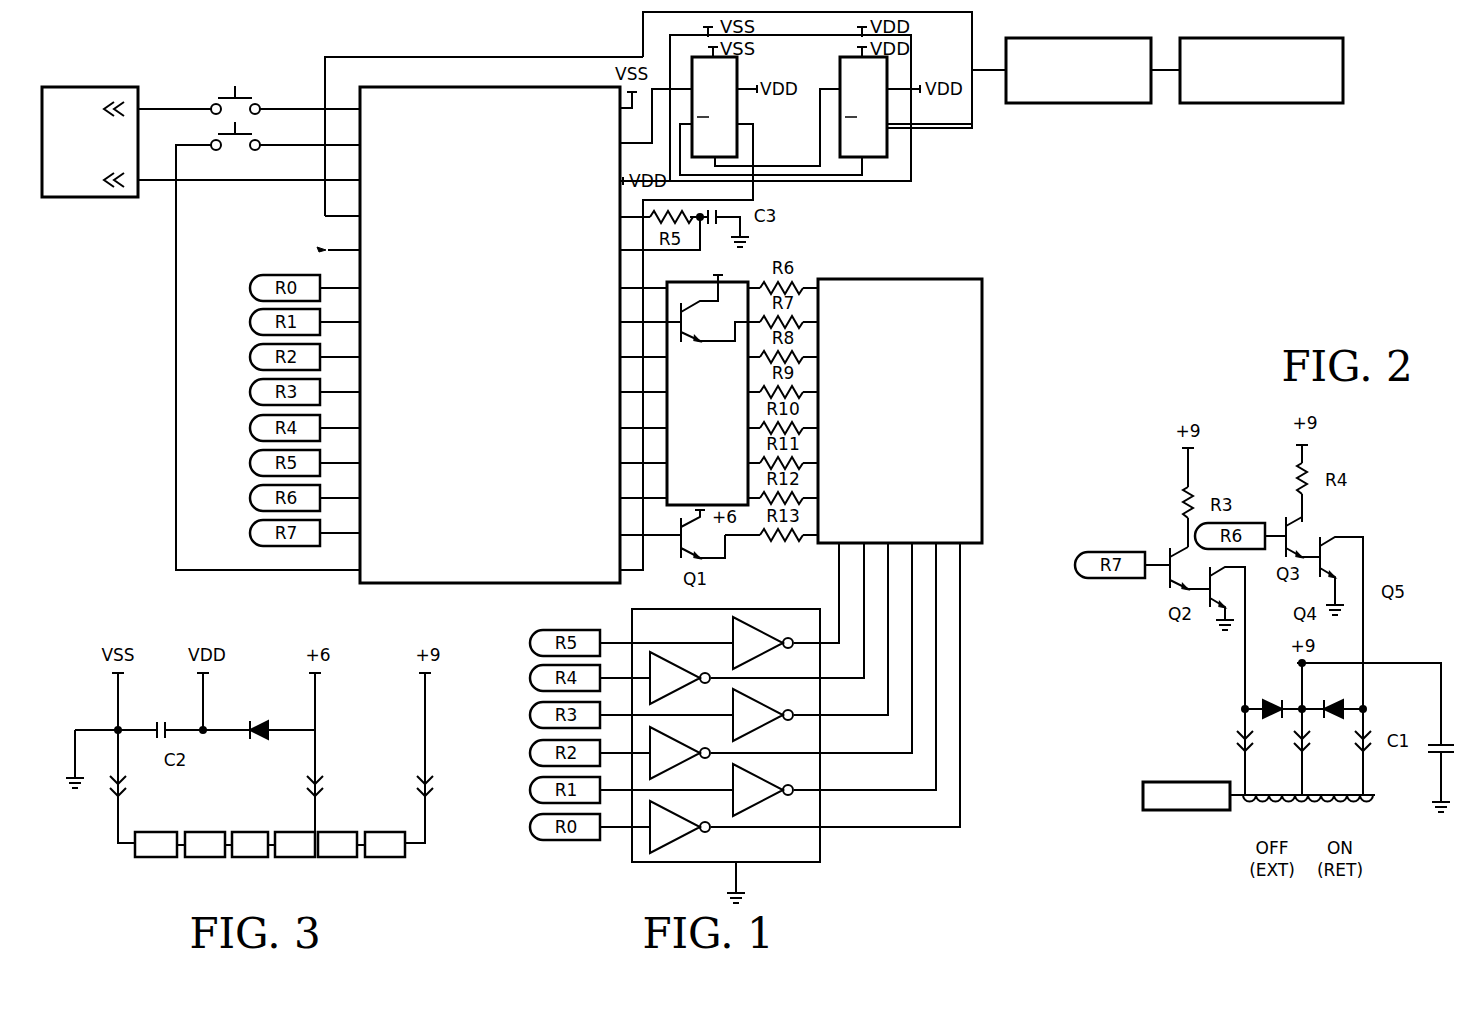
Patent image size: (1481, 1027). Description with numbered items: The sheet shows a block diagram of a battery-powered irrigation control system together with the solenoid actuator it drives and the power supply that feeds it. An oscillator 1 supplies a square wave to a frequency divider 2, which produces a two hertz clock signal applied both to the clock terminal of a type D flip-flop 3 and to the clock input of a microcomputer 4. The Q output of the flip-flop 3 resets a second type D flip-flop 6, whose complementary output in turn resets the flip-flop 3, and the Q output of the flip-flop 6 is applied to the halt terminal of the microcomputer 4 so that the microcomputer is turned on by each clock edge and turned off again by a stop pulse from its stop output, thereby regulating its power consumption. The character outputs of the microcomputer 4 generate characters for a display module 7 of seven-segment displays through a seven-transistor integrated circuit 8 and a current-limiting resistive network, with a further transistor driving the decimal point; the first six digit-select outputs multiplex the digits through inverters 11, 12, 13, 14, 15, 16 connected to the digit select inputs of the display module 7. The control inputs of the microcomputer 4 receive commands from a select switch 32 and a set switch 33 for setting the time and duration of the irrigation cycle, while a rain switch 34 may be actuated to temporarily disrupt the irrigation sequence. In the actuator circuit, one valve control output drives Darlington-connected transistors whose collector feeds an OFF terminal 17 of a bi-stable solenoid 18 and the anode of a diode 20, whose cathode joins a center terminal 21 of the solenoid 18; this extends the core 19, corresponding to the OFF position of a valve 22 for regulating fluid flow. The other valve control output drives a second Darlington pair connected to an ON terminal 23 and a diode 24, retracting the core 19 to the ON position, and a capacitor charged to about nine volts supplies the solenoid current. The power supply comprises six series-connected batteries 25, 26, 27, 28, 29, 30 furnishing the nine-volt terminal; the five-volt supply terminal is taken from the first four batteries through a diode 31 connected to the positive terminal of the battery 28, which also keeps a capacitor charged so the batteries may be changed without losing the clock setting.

In FIG. 1, the oscillator 1 is at (1280, 103).
In FIG. 1, the frequency divider 2 is at (1100, 103).
In FIG. 1, the type D flip-flop 3 is at (887, 143).
In FIG. 1, the microcomputer 4 is at (455, 583).
In FIG. 1, the second type D flip-flop 6 is at (737, 108).
In FIG. 1, the display module 7 is at (975, 300).
In FIG. 1, the seven-transistor integrated circuit 8 is at (694, 288).
In FIG. 1, the inverter 11 is at (688, 822).
In FIG. 1, the inverter 12 is at (772, 785).
In FIG. 1, the inverter 13 is at (688, 748).
In FIG. 1, the inverter 14 is at (772, 711).
In FIG. 1, the inverter 15 is at (688, 673).
In FIG. 1, the inverter 16 is at (783, 638).
In FIG. 2, the OFF terminal 17 is at (1247, 775).
In FIG. 2, the bi-stable solenoid 18 is at (1250, 800).
In FIG. 2, the core 19 is at (1375, 797).
In FIG. 2, the diode 20 is at (1258, 700).
In FIG. 2, the center terminal 21 is at (1304, 775).
In FIG. 2, the valve 22 is at (1185, 782).
In FIG. 2, the ON terminal 23 is at (1365, 775).
In FIG. 2, the diode 24 is at (1345, 704).
In FIG. 3, the battery 25 is at (158, 857).
In FIG. 3, the battery 26 is at (210, 857).
In FIG. 3, the battery 27 is at (254, 857).
In FIG. 3, the battery 28 is at (298, 857).
In FIG. 3, the battery 29 is at (342, 857).
In FIG. 3, the battery 30 is at (388, 857).
In FIG. 3, the diode 31 is at (262, 722).
In FIG. 1, the select switch 32 is at (222, 98).
In FIG. 1, the set switch 33 is at (240, 150).
In FIG. 1, the rain switch 34 is at (105, 87).